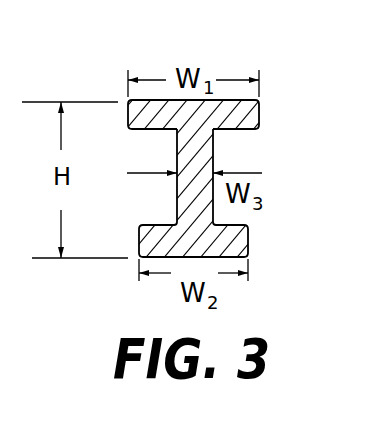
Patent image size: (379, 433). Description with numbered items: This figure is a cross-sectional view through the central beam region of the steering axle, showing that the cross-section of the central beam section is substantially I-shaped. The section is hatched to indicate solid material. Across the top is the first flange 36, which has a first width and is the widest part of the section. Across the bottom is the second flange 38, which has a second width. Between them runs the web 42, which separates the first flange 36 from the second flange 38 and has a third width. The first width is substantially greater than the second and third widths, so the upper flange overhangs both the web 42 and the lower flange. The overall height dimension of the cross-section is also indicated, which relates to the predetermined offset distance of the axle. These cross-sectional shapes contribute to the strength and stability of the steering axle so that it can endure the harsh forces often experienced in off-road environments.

The first flange 36 is at (237, 106).
The web 42 is at (214, 155).
The second flange 38 is at (243, 226).